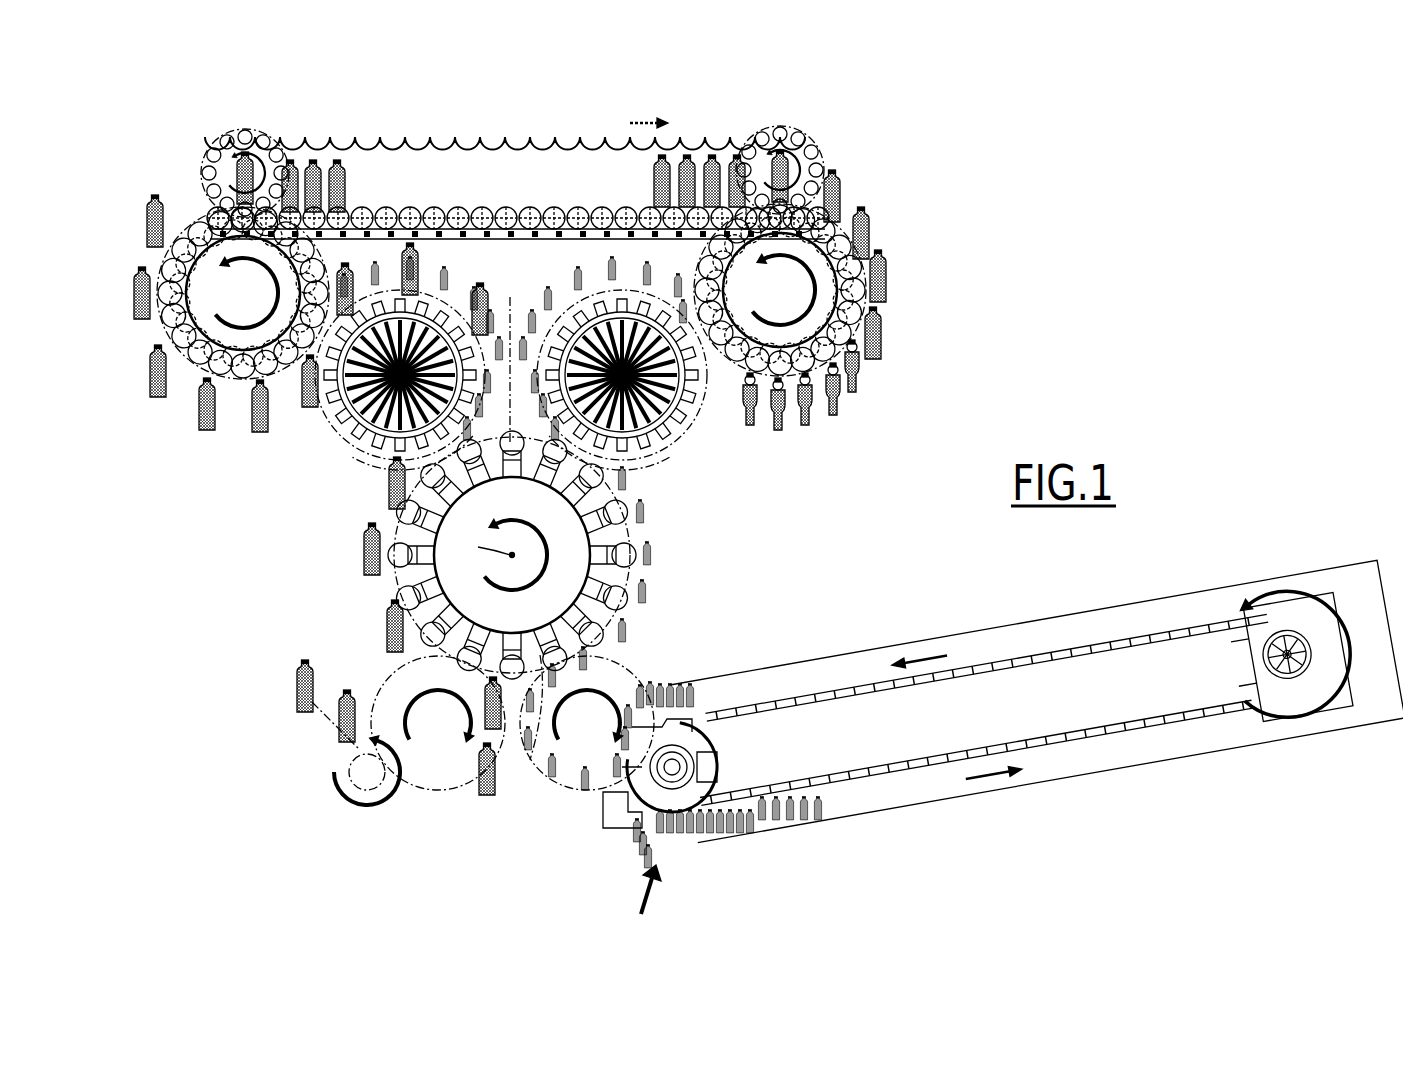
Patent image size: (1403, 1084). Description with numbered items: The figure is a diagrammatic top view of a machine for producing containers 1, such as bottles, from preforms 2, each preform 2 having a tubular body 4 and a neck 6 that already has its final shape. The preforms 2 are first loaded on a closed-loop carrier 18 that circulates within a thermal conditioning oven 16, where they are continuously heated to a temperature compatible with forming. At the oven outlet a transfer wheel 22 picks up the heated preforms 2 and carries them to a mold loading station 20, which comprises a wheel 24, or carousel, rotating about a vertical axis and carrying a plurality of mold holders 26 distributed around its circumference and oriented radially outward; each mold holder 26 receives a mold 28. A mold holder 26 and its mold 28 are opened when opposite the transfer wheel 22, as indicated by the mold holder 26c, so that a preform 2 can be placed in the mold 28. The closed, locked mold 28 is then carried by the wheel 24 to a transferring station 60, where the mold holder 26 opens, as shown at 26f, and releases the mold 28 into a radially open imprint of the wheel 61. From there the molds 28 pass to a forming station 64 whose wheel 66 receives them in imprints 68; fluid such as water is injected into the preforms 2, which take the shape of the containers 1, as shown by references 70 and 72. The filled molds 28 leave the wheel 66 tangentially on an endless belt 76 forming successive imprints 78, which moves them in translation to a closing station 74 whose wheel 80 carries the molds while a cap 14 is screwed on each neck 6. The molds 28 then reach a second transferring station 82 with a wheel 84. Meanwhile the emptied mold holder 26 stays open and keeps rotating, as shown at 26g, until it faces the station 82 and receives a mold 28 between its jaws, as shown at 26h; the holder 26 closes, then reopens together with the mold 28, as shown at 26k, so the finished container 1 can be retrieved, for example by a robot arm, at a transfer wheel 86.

The container 1 is at (288, 697).
The preform 2 is at (655, 520).
The body 4 is at (648, 597).
The neck 6 is at (640, 583).
The cap 14 is at (290, 160).
The thermal conditioning oven 16 is at (1040, 636).
The carrier 18 is at (1080, 742).
The mold loading station 20 is at (656, 498).
The transfer wheel 22 is at (614, 664).
The wheel 24 is at (462, 582).
The mold holder 26 is at (362, 566).
The mold holder in opened configuration 26c is at (537, 702).
The mold holder in opened configuration 26f is at (616, 452).
The mold holder in opened configuration 26g is at (515, 353).
The mold holder in opened configuration 26h is at (400, 452).
The mold holder in opened configuration 26k is at (395, 628).
The mold 28 is at (512, 212).
The transferring station 60 is at (580, 348).
The wheel 61 is at (682, 422).
The forming station 64 is at (850, 290).
The wheel 66 is at (824, 292).
The imprints 68 is at (866, 250).
The formed container 70 is at (843, 415).
The formed container 72 is at (890, 272).
The closing station 74 is at (215, 332).
The endless belt 76 is at (445, 137).
The imprints 78 is at (532, 241).
The wheel 80 is at (212, 282).
The transferring station 82 is at (358, 385).
The wheel 84 is at (378, 422).
The transfer wheel 86 is at (436, 770).